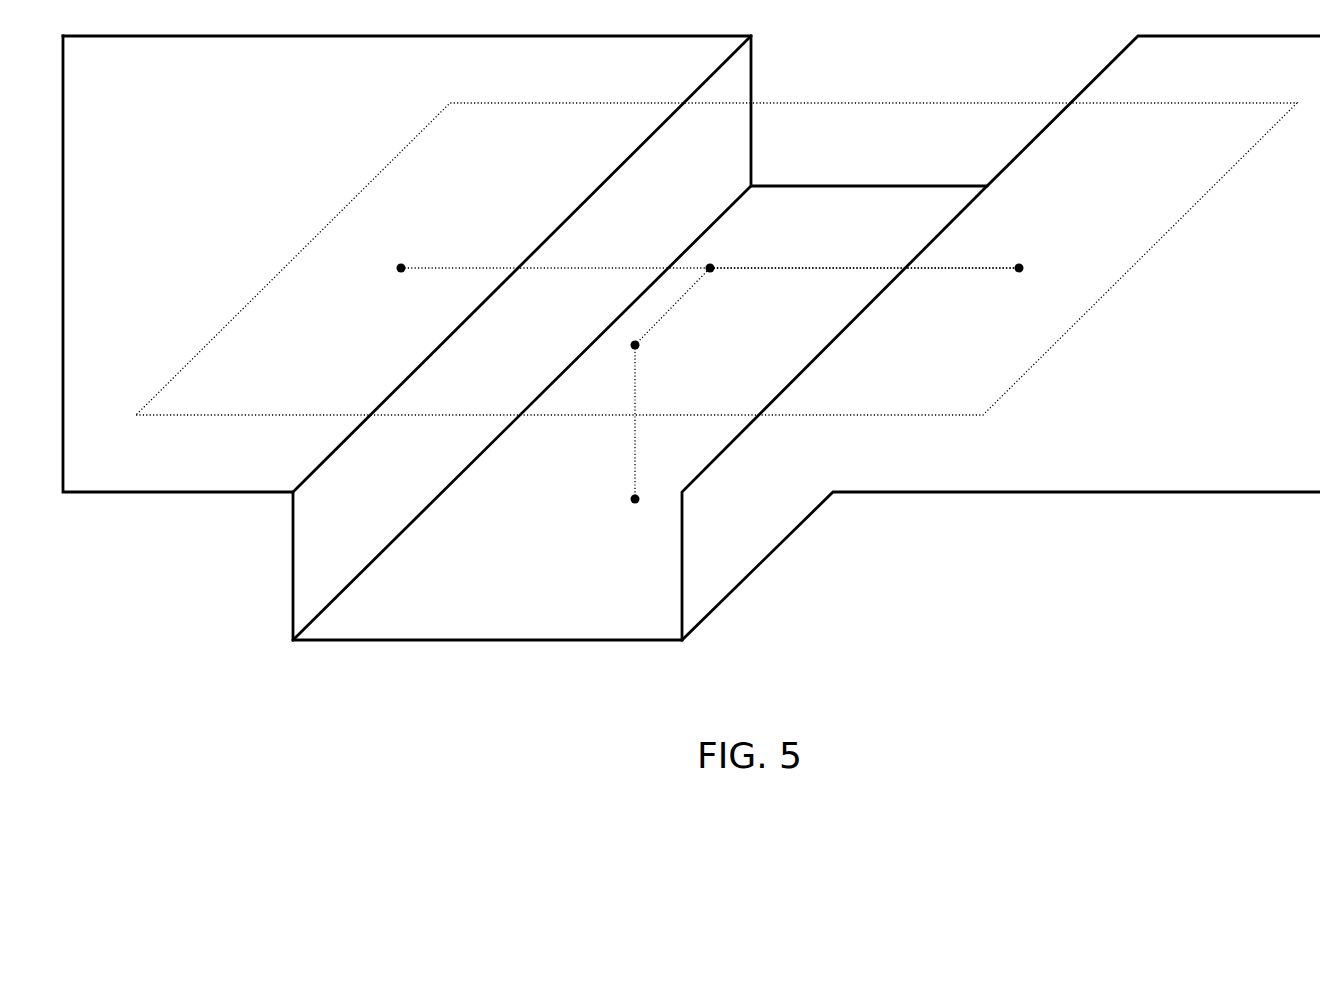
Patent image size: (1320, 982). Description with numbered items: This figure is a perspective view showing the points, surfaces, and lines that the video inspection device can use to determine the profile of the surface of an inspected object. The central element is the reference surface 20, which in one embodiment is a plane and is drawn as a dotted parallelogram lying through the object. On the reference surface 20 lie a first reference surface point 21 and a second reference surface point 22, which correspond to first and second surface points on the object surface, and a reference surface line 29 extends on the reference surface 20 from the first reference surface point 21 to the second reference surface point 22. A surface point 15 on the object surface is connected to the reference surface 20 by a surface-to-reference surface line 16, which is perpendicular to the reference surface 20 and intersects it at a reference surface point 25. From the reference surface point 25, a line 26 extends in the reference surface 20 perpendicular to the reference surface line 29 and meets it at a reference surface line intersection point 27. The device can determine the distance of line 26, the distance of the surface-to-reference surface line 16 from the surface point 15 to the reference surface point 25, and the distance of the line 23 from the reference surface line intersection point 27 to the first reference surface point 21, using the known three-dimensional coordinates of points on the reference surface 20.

The reference surface 20 is at (992, 103).
The first reference surface point 21 is at (401, 268).
The second reference surface point 22 is at (1019, 268).
The line 23 is at (560, 268).
The reference surface point 25 is at (635, 345).
The line 26 is at (677, 302).
The reference surface line intersection point 27 is at (710, 268).
The reference surface line 29 is at (818, 268).
The surface-to-reference surface line 16 is at (634, 445).
The surface point 15 is at (633, 500).